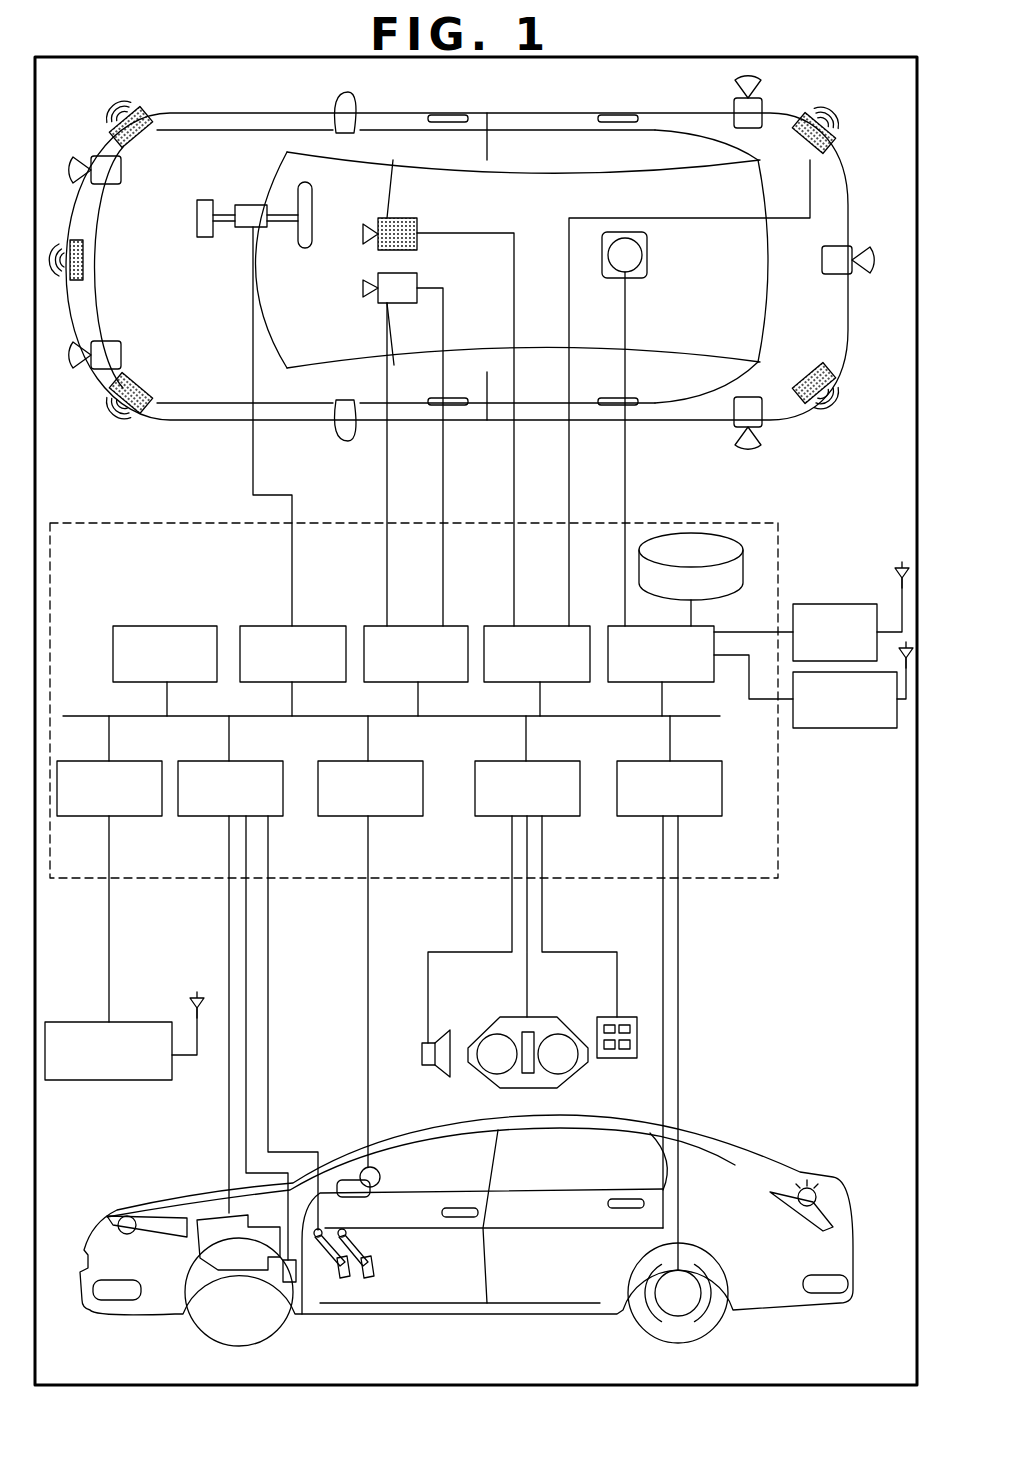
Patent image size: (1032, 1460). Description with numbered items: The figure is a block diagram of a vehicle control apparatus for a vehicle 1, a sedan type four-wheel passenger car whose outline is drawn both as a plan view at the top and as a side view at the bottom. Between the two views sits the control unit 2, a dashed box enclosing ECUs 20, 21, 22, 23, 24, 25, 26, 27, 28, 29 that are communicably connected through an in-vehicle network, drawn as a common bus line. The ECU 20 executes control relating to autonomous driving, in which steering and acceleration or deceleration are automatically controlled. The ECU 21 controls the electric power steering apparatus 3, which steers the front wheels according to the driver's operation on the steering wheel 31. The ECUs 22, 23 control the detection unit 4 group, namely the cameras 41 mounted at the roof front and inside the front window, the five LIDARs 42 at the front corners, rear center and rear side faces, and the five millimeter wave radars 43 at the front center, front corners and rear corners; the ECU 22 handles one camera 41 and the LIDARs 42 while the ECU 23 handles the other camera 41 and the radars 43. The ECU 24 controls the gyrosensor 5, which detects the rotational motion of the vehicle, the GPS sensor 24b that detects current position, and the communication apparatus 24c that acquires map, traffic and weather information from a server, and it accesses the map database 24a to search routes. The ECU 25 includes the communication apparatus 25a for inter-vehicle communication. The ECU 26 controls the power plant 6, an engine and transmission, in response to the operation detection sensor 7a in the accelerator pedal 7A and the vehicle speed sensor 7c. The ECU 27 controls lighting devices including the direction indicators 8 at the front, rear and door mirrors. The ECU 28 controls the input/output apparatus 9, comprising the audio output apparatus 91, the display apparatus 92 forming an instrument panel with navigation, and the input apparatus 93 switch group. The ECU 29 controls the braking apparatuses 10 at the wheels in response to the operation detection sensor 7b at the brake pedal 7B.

The vehicle 1 is at (858, 166).
The control unit 2 is at (778, 878).
The electric power steering apparatus 3 is at (205, 238).
The steering wheel 31 is at (305, 250).
The detection unit 4 is at (93, 110).
The camera 41 is at (420, 245).
The LIDAR 42 is at (113, 190).
The radar 43 is at (150, 116).
The gyrosensor 5 is at (650, 252).
The power plant 6 is at (200, 1215).
The operation detection sensor 7a is at (322, 1197).
The operation detection sensor 7b is at (347, 1226).
The vehicle speed sensor 7c is at (289, 1282).
The accelerator pedal 7A is at (348, 1272).
The brake pedal 7B is at (370, 1262).
The direction indicator 8 is at (120, 1222).
The input/output apparatus 9 is at (450, 1092).
The audio output apparatus 91 is at (422, 1050).
The display apparatus 92 is at (490, 1030).
The input apparatus 93 is at (610, 1060).
The braking apparatus 10 is at (683, 1316).
The ECU 20 is at (197, 624).
The ECU 21 is at (326, 624).
The ECU 22 is at (416, 624).
The ECU 23 is at (541, 624).
The ECU 24 is at (605, 624).
The database 24a is at (690, 530).
The GPS sensor 24b is at (851, 602).
The communication apparatus 24c is at (845, 730).
The ECU 25 is at (132, 818).
The communication apparatus 25a is at (110, 1082).
The ECU 26 is at (211, 818).
The ECU 27 is at (398, 820).
The ECU 28 is at (566, 820).
The ECU 29 is at (702, 820).